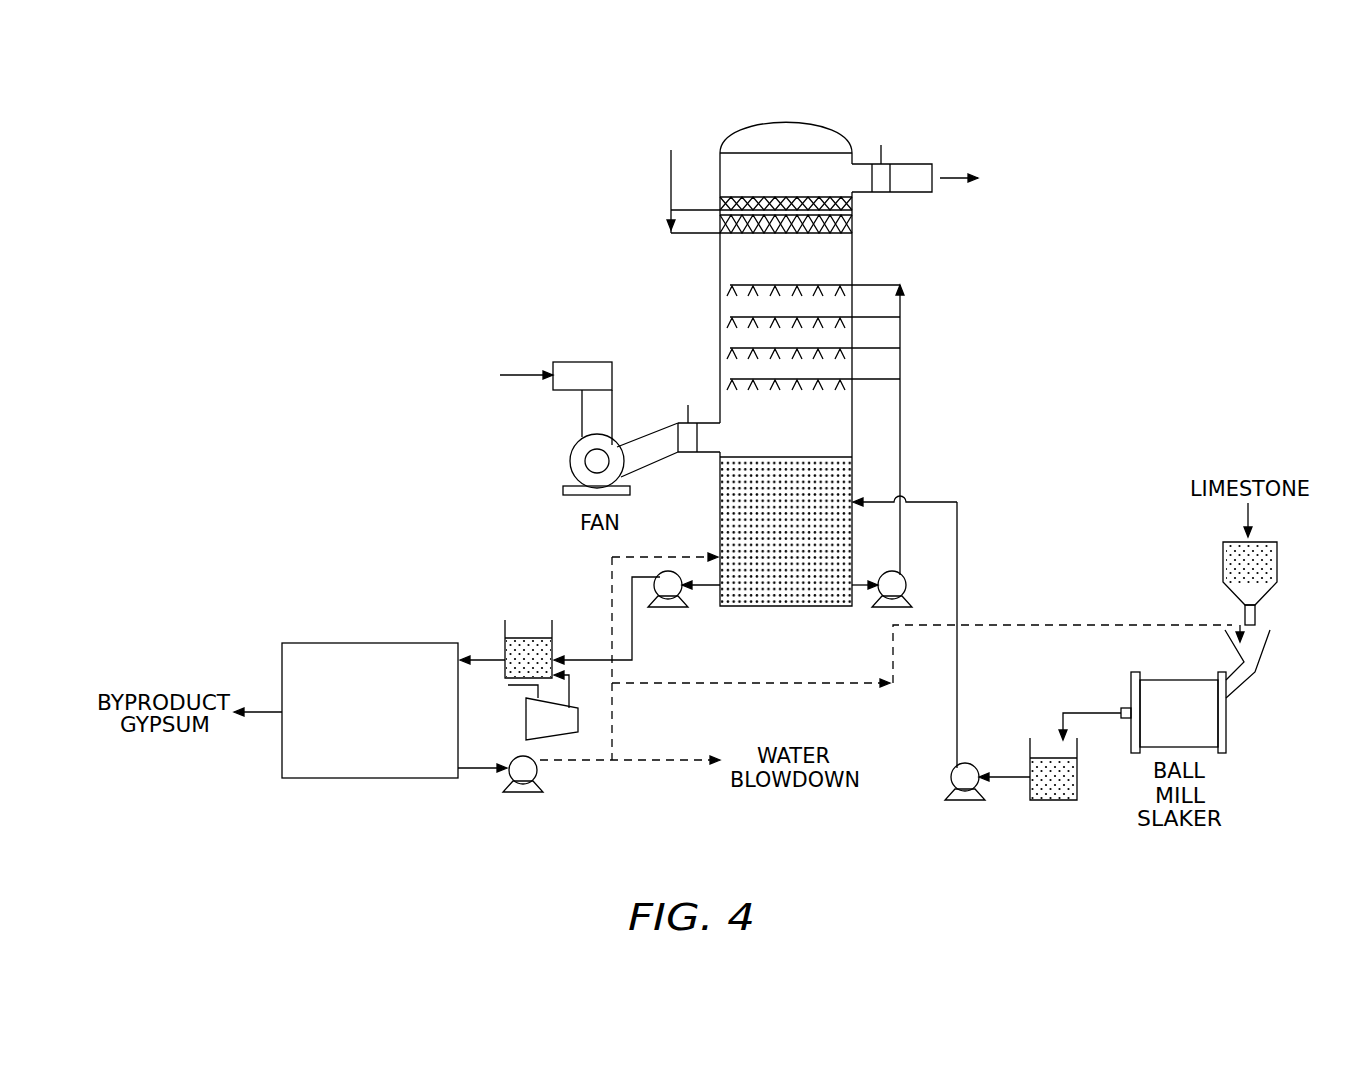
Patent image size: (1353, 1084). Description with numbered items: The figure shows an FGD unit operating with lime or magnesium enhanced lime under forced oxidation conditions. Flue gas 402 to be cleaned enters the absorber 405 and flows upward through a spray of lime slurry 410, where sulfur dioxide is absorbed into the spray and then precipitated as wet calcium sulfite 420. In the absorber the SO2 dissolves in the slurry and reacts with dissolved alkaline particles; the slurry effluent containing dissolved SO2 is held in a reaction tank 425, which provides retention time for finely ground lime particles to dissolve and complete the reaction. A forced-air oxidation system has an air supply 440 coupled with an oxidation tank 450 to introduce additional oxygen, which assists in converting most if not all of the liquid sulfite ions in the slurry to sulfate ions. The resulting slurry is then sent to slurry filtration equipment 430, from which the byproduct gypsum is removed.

The flue gas 402 is at (425, 362).
The absorber 405 is at (853, 265).
The spray of lime slurry 410 is at (735, 293).
The wet calcium sulfite 420 is at (745, 553).
The reaction tank 425 is at (716, 509).
The slurry filtration equipment 430 is at (385, 778).
The air supply 440 is at (578, 722).
The oxidation tank 450 is at (505, 645).